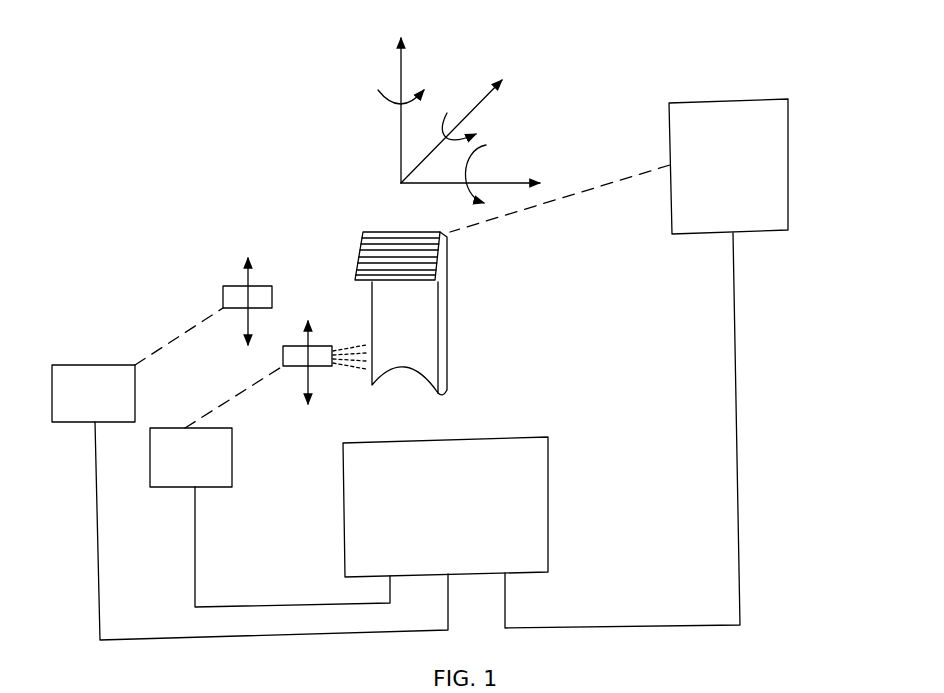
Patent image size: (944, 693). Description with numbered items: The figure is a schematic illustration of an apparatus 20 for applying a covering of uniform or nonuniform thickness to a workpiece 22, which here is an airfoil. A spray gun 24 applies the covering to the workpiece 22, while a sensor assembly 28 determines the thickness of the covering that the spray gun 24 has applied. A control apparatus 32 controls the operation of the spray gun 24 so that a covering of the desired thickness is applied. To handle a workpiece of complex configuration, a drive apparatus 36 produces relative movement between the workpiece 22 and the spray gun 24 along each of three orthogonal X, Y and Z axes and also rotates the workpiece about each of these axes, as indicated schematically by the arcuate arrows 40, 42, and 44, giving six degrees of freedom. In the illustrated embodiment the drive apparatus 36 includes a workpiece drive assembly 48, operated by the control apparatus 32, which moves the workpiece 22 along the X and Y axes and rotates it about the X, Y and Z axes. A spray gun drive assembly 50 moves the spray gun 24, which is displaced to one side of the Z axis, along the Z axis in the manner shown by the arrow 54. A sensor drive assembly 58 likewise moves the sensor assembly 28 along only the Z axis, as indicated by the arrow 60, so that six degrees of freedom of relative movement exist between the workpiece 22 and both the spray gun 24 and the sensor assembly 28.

The apparatus 20 is at (232, 168).
The workpiece 22 is at (451, 346).
The spray gun 24 is at (290, 366).
The sensor assembly 28 is at (223, 300).
The control apparatus 32 is at (535, 490).
The drive apparatus 36 is at (766, 81).
The arcuate arrow 40 is at (490, 146).
The arcuate arrow 42 is at (447, 111).
The arcuate arrow 44 is at (382, 93).
The workpiece drive assembly 48 is at (672, 125).
The spray gun drive assembly 50 is at (212, 477).
The arrow 54 is at (312, 385).
The sensor drive assembly 58 is at (97, 370).
The arrow 60 is at (255, 285).